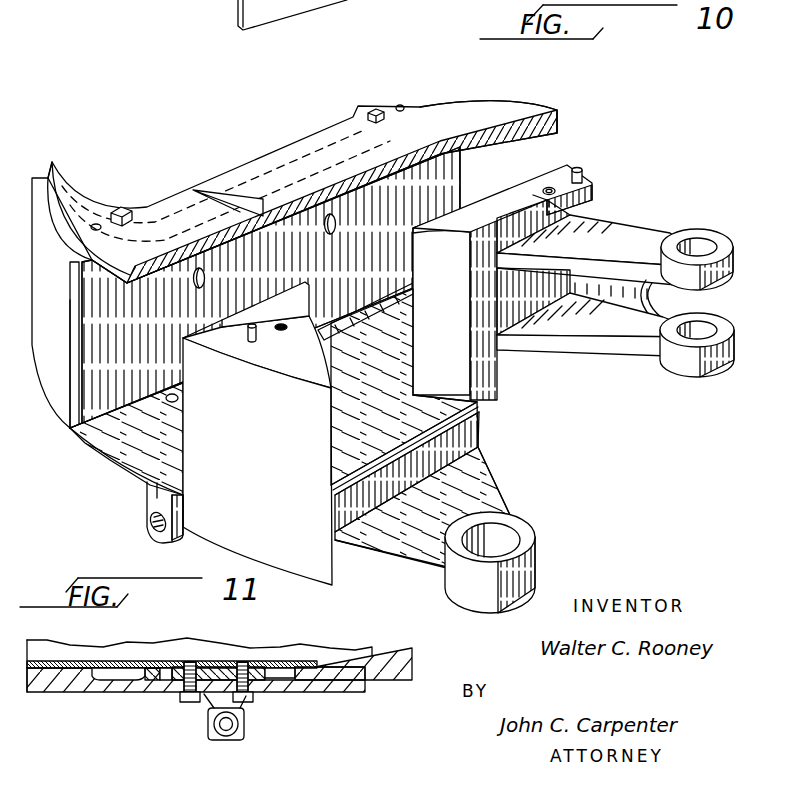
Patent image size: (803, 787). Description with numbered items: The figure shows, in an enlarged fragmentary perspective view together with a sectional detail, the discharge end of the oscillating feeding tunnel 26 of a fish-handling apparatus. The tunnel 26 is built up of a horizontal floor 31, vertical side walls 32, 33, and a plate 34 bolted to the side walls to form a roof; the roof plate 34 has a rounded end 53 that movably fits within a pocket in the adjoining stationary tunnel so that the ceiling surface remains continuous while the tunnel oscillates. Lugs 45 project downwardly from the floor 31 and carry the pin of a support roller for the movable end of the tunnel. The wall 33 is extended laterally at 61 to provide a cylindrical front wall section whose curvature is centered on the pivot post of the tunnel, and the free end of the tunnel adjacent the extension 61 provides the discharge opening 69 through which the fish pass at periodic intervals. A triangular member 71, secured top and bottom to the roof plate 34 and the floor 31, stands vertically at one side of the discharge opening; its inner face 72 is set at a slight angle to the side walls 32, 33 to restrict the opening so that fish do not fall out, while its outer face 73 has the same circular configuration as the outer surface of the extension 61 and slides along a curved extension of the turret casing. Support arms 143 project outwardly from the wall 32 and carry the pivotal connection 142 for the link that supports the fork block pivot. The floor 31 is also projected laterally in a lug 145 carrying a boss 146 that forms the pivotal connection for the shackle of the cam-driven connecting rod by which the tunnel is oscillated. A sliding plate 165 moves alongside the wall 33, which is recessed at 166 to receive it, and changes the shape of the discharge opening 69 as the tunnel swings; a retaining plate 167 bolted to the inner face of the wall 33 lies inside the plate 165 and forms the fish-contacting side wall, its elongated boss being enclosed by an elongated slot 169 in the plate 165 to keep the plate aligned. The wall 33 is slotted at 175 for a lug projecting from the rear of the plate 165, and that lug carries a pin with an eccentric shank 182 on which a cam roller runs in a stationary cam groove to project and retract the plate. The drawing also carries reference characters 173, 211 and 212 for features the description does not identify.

In FIG. 10, the feeding tunnel 26 is at (373, 193).
In FIG. 10, the horizontal floor 31 is at (125, 431).
In FIG. 10, the side wall 32 is at (513, 193).
In FIG. 10, the side wall 33 is at (447, 177).
In FIG. 11, the side wall 33 is at (275, 688).
In FIG. 10, the roof plate 34 is at (267, 165).
In FIG. 10, the lugs 45 is at (148, 506).
In FIG. 10, the rounded end 53 is at (527, 103).
In FIG. 10, the extension 61 is at (45, 212).
In FIG. 10, the discharge opening 69 is at (72, 345).
In FIG. 10, the triangular member 71 is at (280, 367).
In FIG. 10, the inner face 72 is at (216, 331).
In FIG. 10, the outer face 73 is at (200, 455).
In FIG. 10, the pivotal connection 142 is at (703, 243).
In FIG. 10, the support arms 143 is at (627, 233).
In FIG. 10, the lug 145 is at (483, 478).
In FIG. 10, the boss 146 is at (538, 553).
In FIG. 11, the sliding plate 165 is at (385, 688).
In FIG. 10, the recess 166 is at (81, 298).
In FIG. 11, the recess 166 is at (118, 678).
In FIG. 11, the retaining plate 167 is at (152, 663).
In FIG. 11, the elongated slot 169 is at (160, 680).
In FIG. 10, the toothed strip 173 is at (367, 320).
In FIG. 10, the slot 175 is at (273, 318).
In FIG. 11, the eccentric shank 182 is at (222, 735).
In FIG. 11, the end wedge 211 is at (420, 651).
In FIG. 11, the sloped surface 212 is at (386, 650).